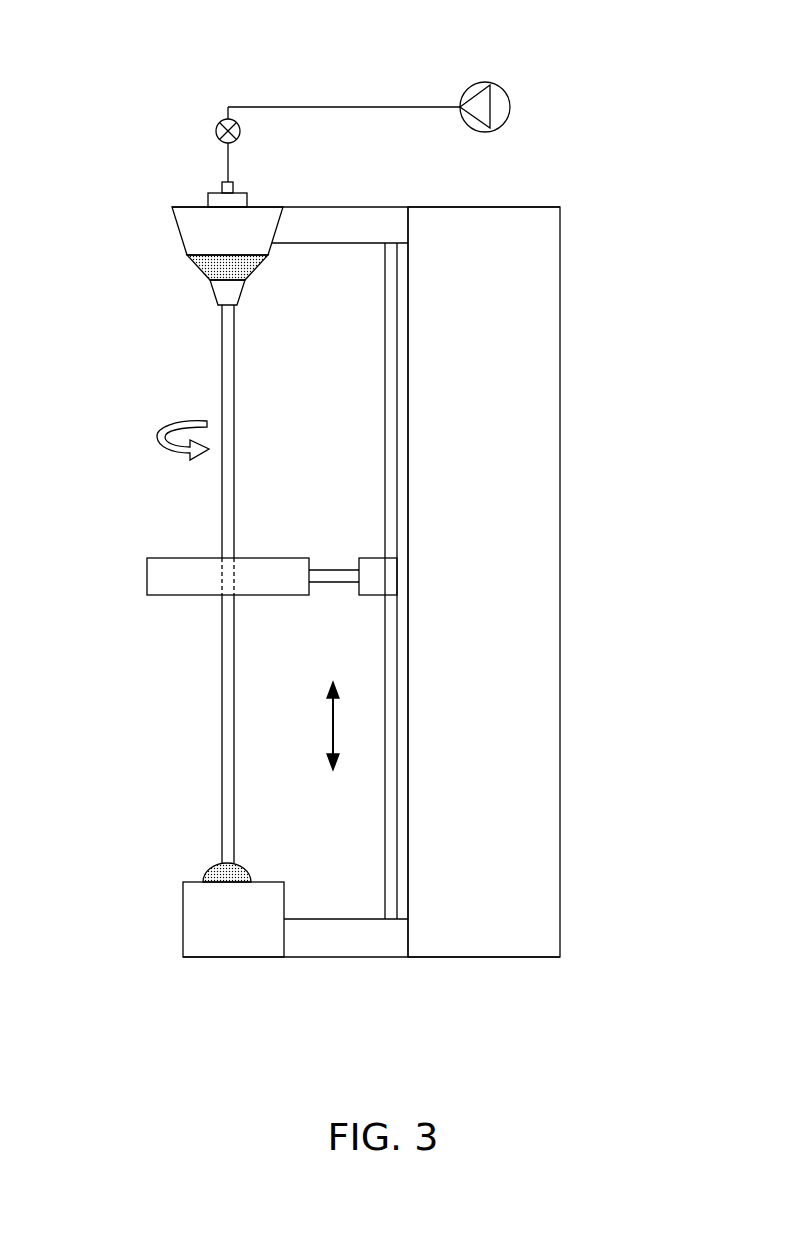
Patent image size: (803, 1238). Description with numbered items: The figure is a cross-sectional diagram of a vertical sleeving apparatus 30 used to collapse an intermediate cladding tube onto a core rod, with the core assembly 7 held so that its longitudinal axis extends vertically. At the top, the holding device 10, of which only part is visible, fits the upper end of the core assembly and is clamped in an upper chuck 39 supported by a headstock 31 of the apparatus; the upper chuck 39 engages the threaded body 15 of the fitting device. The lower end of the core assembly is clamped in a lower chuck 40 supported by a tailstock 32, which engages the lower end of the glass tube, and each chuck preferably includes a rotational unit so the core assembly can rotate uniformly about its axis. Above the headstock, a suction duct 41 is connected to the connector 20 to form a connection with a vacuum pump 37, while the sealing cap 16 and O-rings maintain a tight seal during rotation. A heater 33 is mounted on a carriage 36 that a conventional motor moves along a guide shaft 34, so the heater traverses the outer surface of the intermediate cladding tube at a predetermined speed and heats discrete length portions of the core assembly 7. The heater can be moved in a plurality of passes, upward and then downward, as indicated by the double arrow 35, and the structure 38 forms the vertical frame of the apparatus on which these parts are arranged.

The core assembly 7 is at (210, 712).
The holding device 10 is at (266, 284).
The threaded body 15 is at (213, 290).
The sealing cap 16 is at (208, 197).
The connector 20 is at (221, 189).
The vertical sleeving apparatus 30 is at (584, 149).
The headstock 31 is at (208, 228).
The tailstock 32 is at (208, 919).
The heater 33 is at (168, 557).
The guide shaft 34 is at (383, 870).
The double arrow 35 is at (333, 720).
The carriage 36 is at (372, 565).
The vacuum pump 37 is at (470, 90).
The frame 38 is at (522, 603).
The upper chuck 39 is at (207, 268).
The lower chuck 40 is at (218, 863).
The suction duct 41 is at (321, 103).